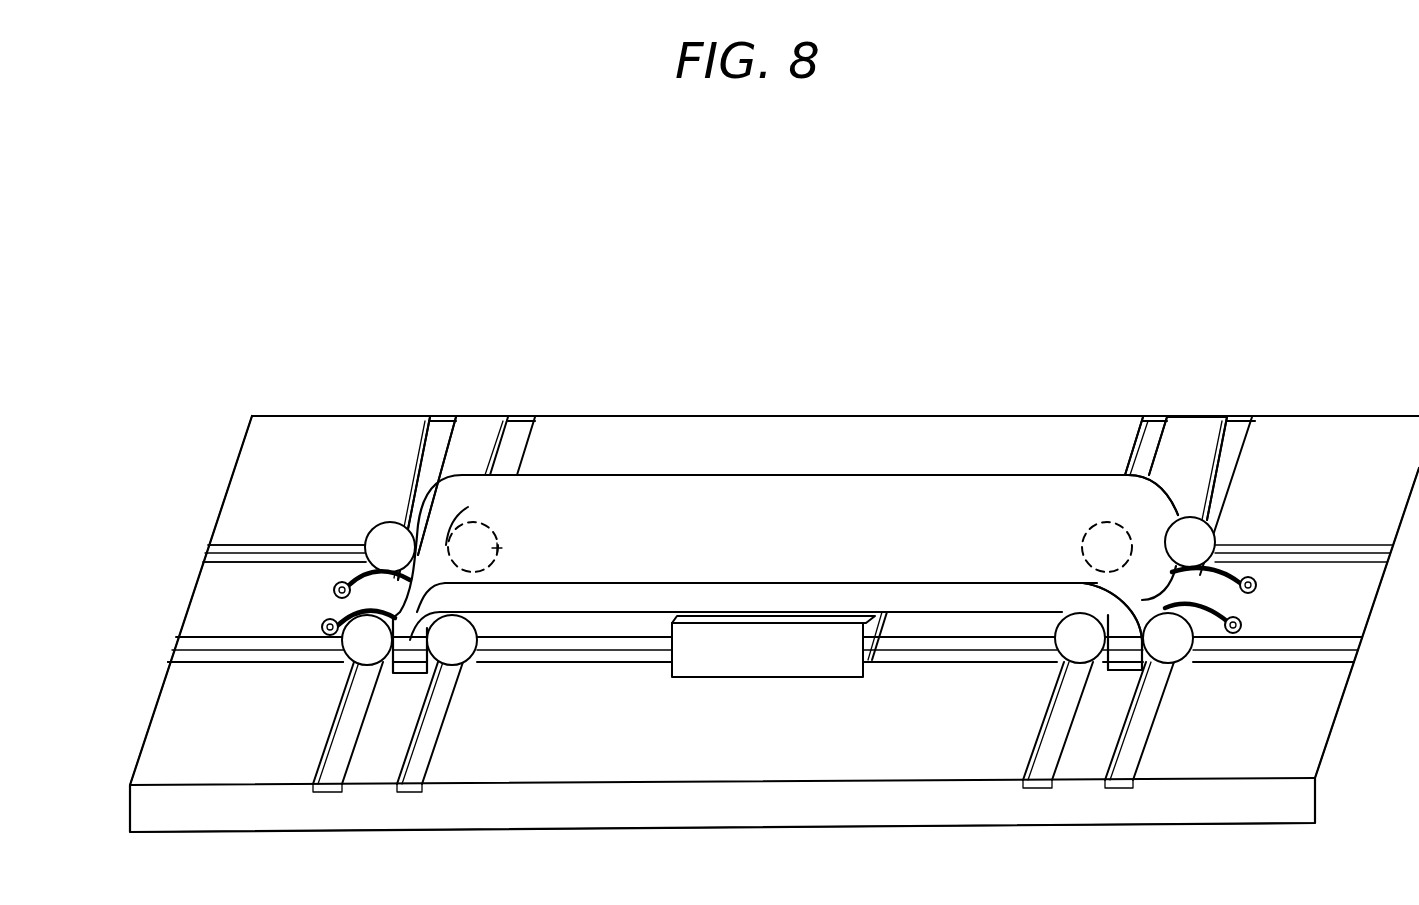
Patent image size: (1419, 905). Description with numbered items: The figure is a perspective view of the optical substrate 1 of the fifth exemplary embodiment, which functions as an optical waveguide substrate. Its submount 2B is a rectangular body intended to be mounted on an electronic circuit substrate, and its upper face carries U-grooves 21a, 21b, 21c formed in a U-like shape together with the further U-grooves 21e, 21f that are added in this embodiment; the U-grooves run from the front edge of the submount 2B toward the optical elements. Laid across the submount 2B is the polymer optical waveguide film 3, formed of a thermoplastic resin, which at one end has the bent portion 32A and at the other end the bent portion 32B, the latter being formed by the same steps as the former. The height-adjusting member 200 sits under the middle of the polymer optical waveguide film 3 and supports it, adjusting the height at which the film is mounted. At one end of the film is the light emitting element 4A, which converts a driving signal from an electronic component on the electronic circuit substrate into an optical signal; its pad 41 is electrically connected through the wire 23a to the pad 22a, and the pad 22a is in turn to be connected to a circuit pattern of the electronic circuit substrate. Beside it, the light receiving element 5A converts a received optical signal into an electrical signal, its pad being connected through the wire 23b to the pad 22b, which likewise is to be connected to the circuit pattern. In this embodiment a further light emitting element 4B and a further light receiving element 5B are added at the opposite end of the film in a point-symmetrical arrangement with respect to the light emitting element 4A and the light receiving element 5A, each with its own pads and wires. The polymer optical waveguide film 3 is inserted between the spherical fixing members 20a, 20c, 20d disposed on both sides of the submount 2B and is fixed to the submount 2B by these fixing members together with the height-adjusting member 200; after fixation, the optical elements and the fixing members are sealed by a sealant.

The optical substrate 1 is at (1026, 265).
The submount 2B is at (1188, 437).
The polymer optical waveguide film 3 is at (690, 470).
The light emitting element 4A is at (478, 531).
The light emitting element 4B is at (1123, 660).
The light receiving element 5A is at (444, 607).
The light receiving element 5B is at (1112, 618).
The fixing member 20a is at (383, 545).
The fixing member 20c is at (467, 655).
The fixing member 20d is at (360, 655).
The U-groove 21a is at (328, 790).
The U-groove 21b is at (410, 790).
The U-groove 21c is at (210, 547).
The U-groove 21e is at (1043, 790).
The U-groove 21f is at (1124, 790).
The pad 22a is at (334, 591).
The pad 22b is at (322, 627).
The wire 23a is at (343, 575).
The wire 23b is at (355, 626).
The bent portion 32A is at (470, 470).
The bent portion 32B is at (1142, 468).
The pad 41 is at (1168, 578).
The height-adjusting member 200 is at (718, 660).